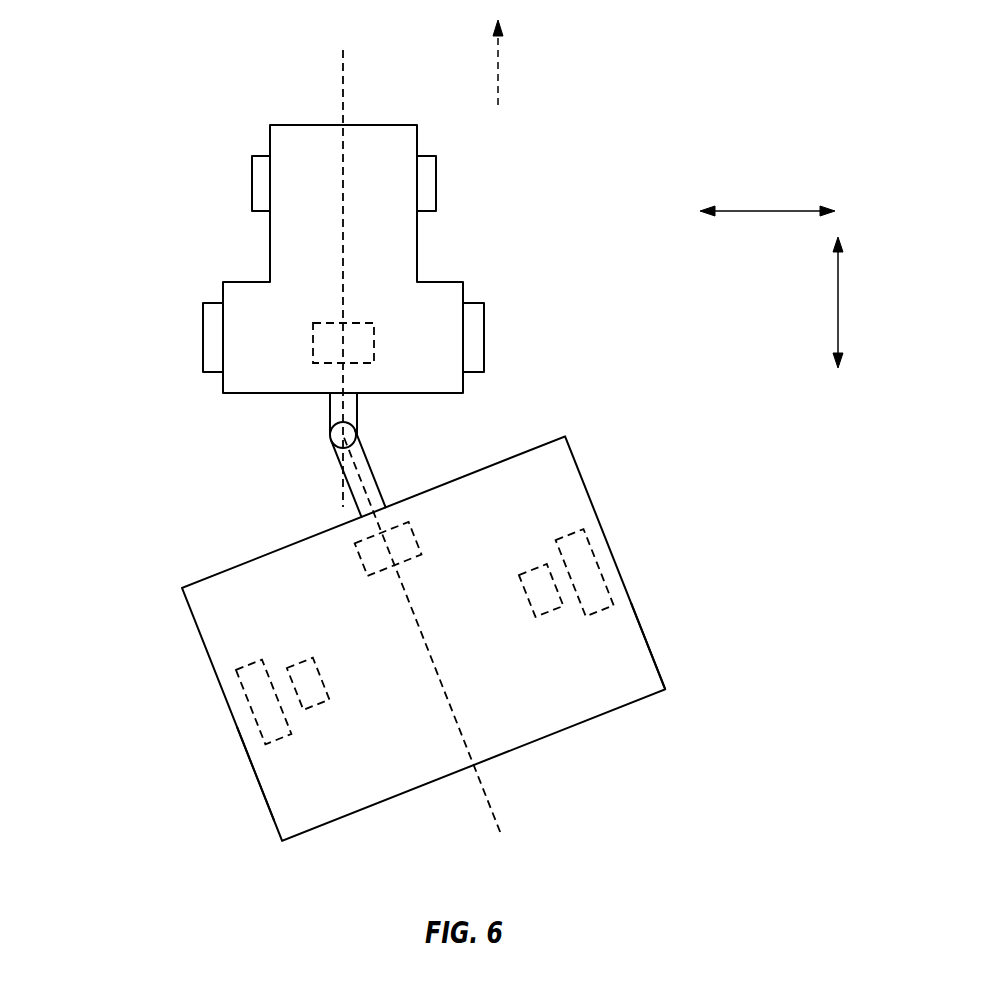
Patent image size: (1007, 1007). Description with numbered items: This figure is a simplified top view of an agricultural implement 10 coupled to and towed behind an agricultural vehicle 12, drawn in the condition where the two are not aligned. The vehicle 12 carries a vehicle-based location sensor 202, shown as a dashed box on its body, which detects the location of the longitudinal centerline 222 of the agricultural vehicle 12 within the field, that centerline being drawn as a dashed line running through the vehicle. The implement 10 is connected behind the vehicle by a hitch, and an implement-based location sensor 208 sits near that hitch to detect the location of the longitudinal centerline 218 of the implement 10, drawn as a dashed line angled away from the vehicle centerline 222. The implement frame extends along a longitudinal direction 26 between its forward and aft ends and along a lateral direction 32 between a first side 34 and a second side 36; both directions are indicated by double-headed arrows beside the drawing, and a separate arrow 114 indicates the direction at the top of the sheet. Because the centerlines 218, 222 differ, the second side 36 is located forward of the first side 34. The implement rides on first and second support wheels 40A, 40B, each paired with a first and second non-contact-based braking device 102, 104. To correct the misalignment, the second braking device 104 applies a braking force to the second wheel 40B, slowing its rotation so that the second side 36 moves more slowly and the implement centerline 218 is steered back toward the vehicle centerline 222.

The implement 10 is at (112, 506).
The agricultural vehicle 12 is at (178, 150).
The longitudinal direction 26 is at (838, 309).
The lateral direction 32 is at (762, 211).
The first side 34 is at (253, 772).
The second side 36 is at (653, 650).
The first support wheel 40A is at (247, 698).
The second support wheel 40B is at (608, 573).
The first non-contact-based braking device 102 is at (323, 684).
The second non-contact-based braking device 104 is at (530, 567).
The forward direction 114 is at (498, 76).
The vehicle-based location sensor 202 is at (374, 343).
The implement-based location sensor 208 is at (352, 556).
The longitudinal centerline of the implement 218 is at (497, 813).
The longitudinal centerline of the agricultural vehicle 222 is at (343, 90).